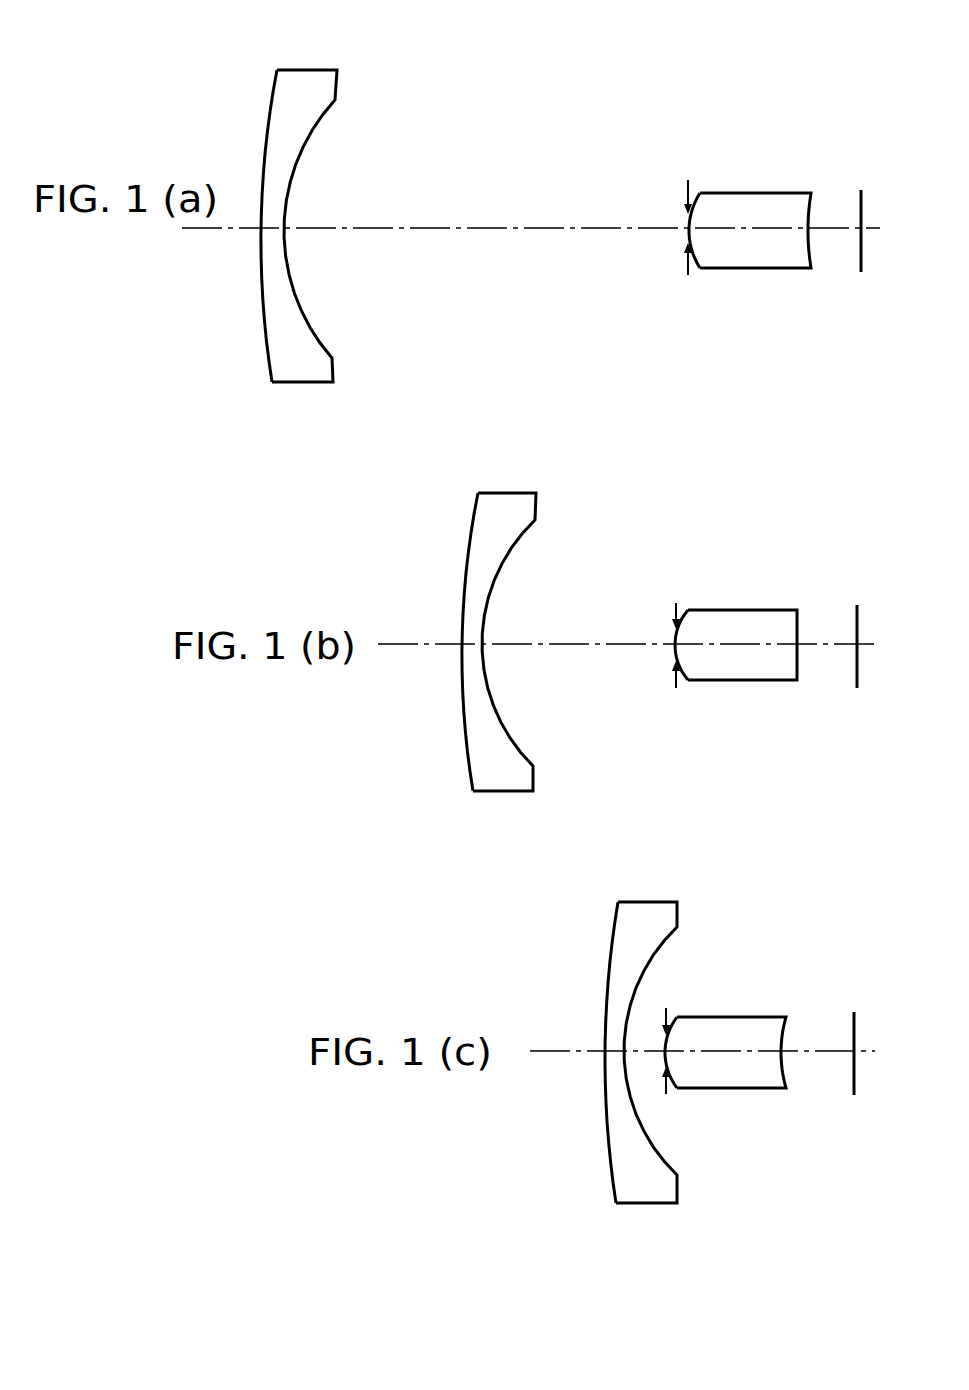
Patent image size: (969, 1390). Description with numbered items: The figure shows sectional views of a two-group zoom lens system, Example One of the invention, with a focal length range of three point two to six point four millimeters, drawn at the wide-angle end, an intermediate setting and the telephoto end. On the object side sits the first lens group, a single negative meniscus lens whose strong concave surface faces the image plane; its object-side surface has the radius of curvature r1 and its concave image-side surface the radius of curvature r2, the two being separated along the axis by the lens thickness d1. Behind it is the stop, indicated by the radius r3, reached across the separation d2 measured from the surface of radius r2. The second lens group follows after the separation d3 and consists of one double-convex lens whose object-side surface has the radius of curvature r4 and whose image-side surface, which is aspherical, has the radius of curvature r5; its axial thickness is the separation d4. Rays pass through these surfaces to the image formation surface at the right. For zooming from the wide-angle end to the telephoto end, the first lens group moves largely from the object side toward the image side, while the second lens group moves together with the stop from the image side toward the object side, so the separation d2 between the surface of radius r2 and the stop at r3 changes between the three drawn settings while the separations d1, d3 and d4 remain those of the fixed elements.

The radius of curvature of lens surface r1 is at (270, 358).
The radius of curvature of lens surface r2 is at (327, 349).
The radius of curvature of lens surface r3 is at (688, 222).
The radius of curvature of lens surface r4 is at (688, 238).
The radius of curvature of lens surface r5 is at (810, 258).
The separation between adjacent lens surfaces d1 is at (472, 646).
The separation between adjacent lens surfaces d2 is at (580, 643).
The separation between adjacent lens surfaces d3 is at (677, 640).
The separation between adjacent lens surfaces d4 is at (735, 647).